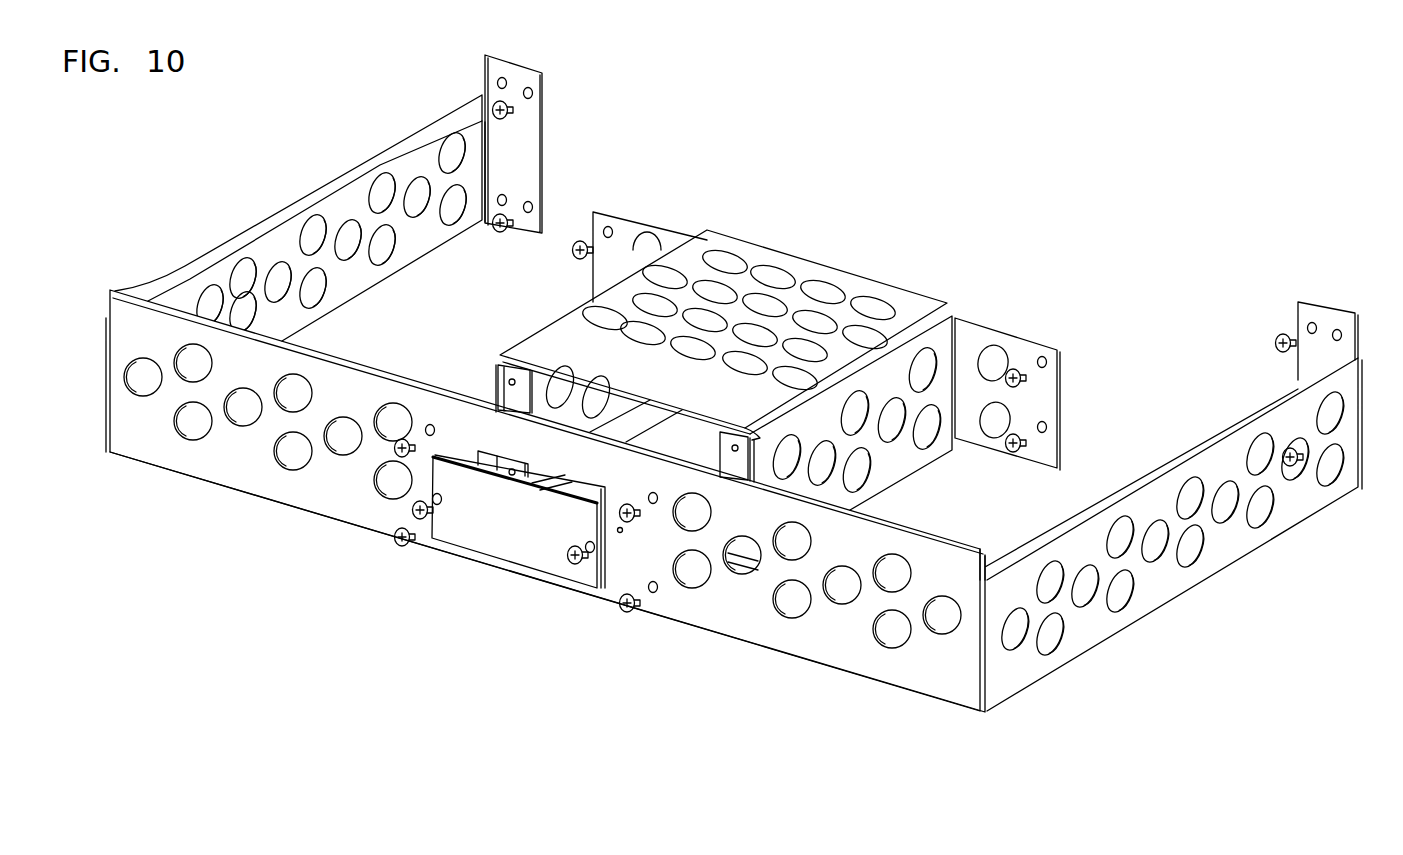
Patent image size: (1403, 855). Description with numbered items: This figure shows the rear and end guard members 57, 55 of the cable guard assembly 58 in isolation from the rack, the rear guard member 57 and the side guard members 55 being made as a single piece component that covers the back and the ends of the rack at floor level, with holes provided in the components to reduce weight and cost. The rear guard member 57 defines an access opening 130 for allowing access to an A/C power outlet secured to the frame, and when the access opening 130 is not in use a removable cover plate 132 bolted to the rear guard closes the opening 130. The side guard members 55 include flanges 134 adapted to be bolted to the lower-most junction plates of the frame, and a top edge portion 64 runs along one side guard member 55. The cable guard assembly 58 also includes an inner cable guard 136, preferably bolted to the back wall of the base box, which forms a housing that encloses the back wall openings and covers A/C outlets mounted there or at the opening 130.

The end guard member 55 is at (347, 282).
The rear guard member 57 is at (740, 612).
The cable guard assembly 58 is at (734, 456).
The top rail of side wall 64 is at (222, 250).
The access opening 130 is at (512, 445).
The removable cover plate 132 is at (503, 522).
The flange 134 is at (522, 66).
The inner cable guard 136 is at (819, 260).